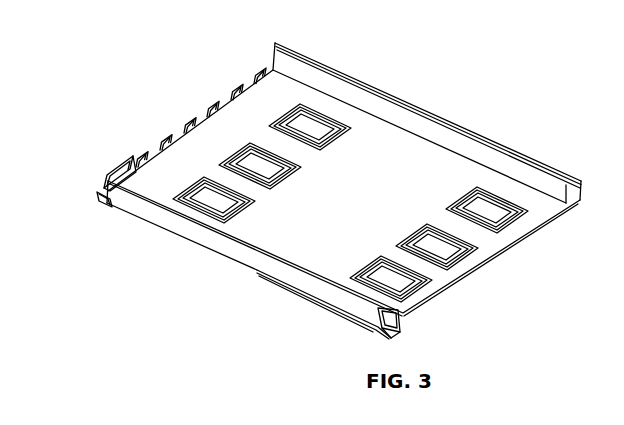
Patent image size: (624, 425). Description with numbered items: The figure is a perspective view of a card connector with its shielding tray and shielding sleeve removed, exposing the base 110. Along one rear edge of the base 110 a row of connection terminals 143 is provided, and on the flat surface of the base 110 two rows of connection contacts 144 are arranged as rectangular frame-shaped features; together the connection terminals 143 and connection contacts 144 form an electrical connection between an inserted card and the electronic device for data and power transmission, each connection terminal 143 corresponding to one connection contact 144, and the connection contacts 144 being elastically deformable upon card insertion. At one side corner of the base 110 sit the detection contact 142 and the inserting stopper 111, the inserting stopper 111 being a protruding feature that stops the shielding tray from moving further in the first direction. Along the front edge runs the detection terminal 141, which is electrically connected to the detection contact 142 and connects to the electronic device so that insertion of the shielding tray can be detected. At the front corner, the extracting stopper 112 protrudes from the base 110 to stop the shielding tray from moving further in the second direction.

The base 110 is at (313, 184).
The inserting stopper 111 is at (100, 197).
The extracting stopper 112 is at (405, 326).
The detection terminal 141 is at (372, 339).
The detection contact 142 is at (124, 166).
The connection terminals 143 is at (222, 92).
The connection contacts 144 is at (490, 205).